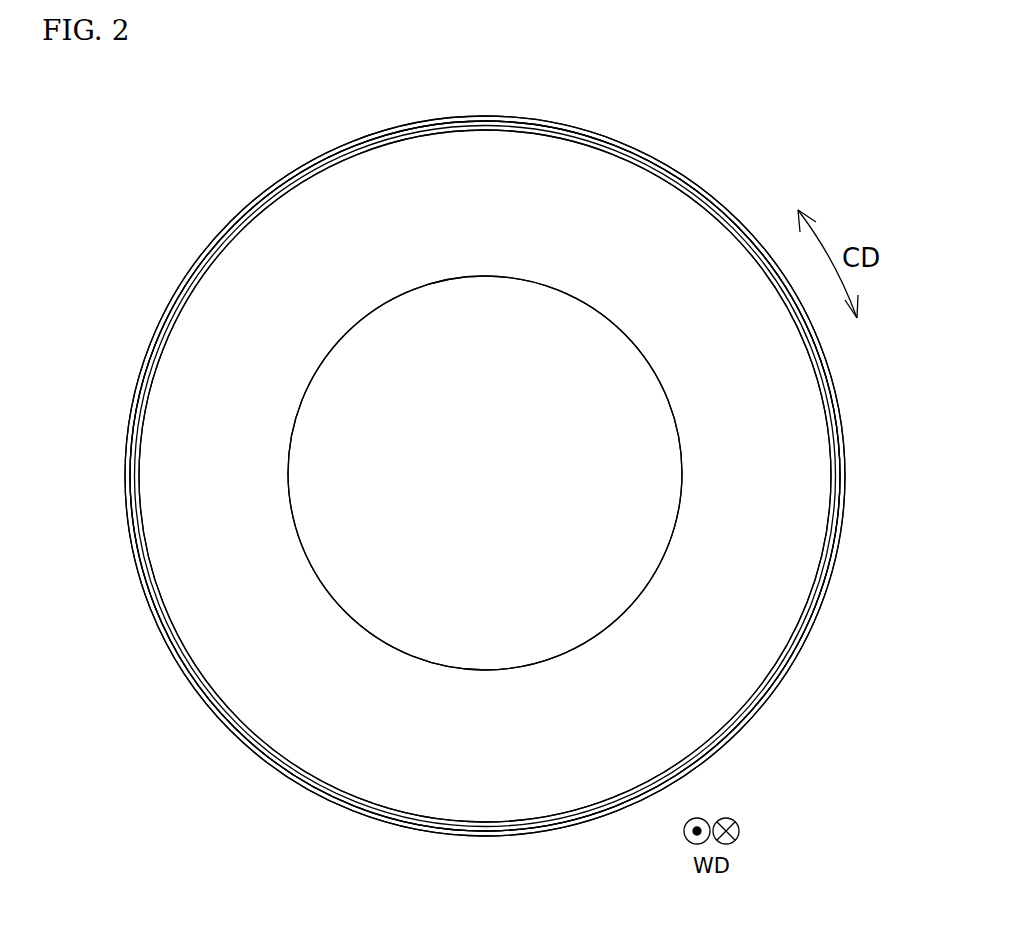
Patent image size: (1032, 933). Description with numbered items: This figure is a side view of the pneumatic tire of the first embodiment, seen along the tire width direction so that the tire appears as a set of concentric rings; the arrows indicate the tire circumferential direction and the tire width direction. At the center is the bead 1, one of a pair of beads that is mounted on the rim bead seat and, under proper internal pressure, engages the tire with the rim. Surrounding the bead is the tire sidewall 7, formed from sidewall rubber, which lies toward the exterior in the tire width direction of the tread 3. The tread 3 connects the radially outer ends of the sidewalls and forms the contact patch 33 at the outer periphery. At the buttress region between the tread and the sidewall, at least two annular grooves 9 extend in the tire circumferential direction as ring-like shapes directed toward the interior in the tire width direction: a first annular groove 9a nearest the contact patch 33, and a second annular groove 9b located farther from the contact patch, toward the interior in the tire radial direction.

The bead 1 is at (303, 549).
The tread 3 is at (123, 518).
The tire sidewall 7 is at (233, 470).
The annular groove 9 is at (837, 418).
The first annular groove 9a is at (485, 476).
The second annular groove 9b is at (831, 494).
The contact patch 33 is at (838, 560).